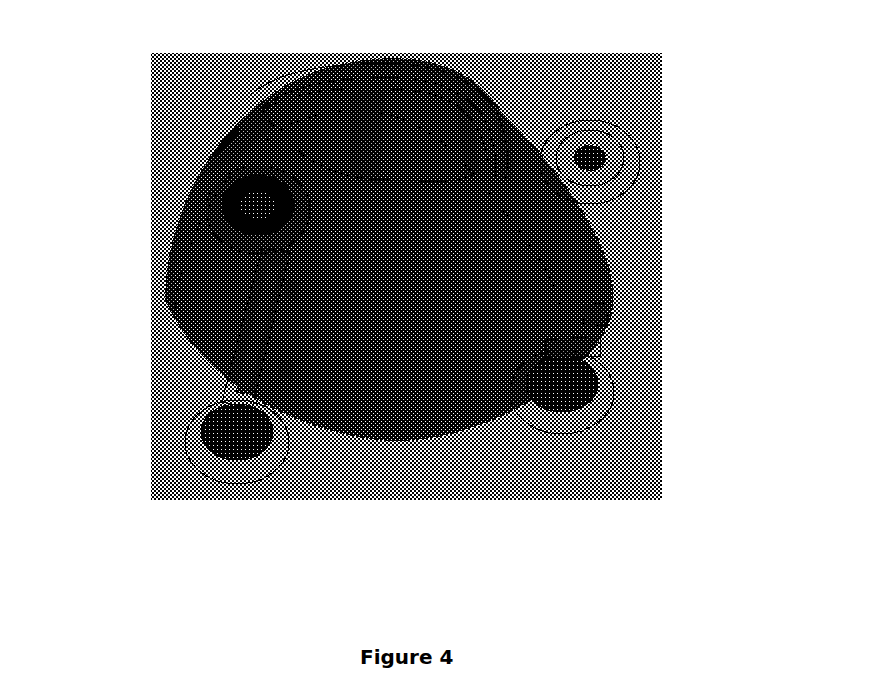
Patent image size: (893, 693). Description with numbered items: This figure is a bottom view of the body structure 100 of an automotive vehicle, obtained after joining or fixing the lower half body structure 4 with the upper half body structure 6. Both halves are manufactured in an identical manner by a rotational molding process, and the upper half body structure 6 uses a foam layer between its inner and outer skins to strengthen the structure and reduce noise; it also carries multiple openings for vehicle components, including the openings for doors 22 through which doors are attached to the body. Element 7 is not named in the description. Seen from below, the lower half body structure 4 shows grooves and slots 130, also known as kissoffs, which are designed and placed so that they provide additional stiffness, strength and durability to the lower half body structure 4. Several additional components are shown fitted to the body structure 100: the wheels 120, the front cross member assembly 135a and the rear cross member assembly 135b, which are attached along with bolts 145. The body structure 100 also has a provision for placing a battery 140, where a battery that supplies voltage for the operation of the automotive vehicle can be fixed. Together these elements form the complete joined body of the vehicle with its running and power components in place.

The lower half body structure 4 is at (150, 305).
The upper half body structure 6 is at (150, 112).
The fender 7 is at (150, 163).
The openings for doors 22 is at (432, 52).
The body structure 100 is at (413, 286).
The wheels 120 is at (665, 458).
The grooves and slots 130 is at (662, 328).
The front cross member assembly 135a is at (662, 382).
The rear cross member assembly 135b is at (150, 362).
The battery 140 is at (305, 500).
The bolts 145 is at (660, 258).